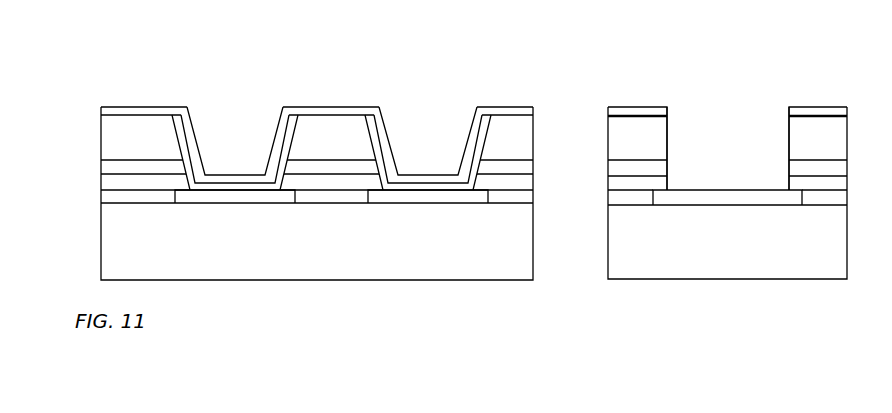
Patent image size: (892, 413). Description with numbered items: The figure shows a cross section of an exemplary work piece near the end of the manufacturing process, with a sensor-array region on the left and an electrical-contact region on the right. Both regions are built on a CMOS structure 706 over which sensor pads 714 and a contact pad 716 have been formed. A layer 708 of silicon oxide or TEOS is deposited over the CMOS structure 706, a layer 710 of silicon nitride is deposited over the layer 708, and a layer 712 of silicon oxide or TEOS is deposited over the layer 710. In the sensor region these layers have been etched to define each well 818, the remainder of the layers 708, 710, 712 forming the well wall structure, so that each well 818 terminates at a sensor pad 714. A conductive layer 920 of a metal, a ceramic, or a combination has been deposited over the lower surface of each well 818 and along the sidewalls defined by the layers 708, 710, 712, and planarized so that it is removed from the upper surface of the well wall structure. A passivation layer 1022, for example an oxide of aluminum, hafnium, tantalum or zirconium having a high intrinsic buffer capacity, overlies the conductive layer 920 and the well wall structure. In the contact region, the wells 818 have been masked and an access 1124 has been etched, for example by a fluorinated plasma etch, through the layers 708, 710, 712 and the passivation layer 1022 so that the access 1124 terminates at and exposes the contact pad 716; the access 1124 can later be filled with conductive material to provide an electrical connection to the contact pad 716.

The CMOS structure 706 is at (115, 250).
The layer of silicon oxide or TEOS 708 is at (107, 190).
The layer of silicon nitride 710 is at (107, 170).
The layer of silicon oxide or TEOS 712 is at (107, 128).
The sensor pad 714 is at (235, 192).
The contact pad 716 is at (727, 192).
The well 818 is at (248, 123).
The conductive layer 920 is at (183, 137).
The passivation layer 1022 is at (510, 112).
The access 1124 is at (731, 137).